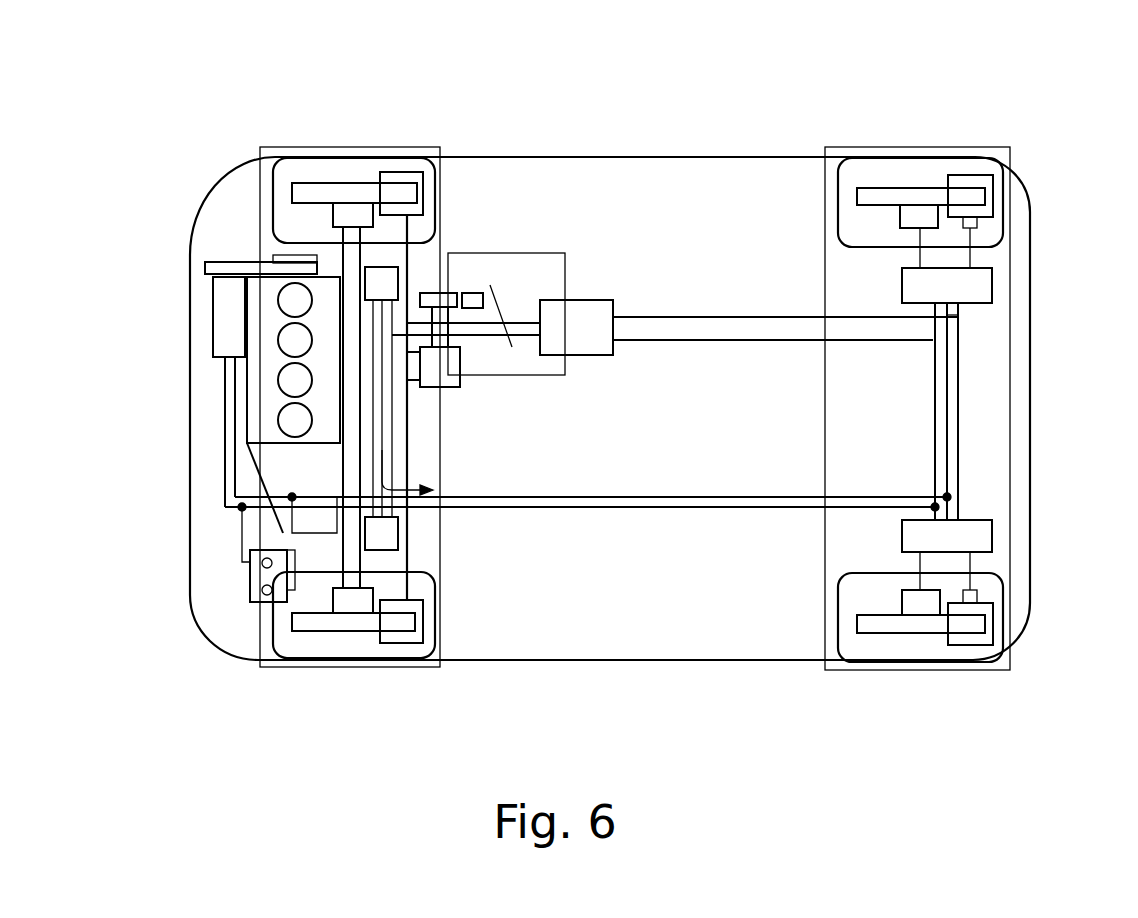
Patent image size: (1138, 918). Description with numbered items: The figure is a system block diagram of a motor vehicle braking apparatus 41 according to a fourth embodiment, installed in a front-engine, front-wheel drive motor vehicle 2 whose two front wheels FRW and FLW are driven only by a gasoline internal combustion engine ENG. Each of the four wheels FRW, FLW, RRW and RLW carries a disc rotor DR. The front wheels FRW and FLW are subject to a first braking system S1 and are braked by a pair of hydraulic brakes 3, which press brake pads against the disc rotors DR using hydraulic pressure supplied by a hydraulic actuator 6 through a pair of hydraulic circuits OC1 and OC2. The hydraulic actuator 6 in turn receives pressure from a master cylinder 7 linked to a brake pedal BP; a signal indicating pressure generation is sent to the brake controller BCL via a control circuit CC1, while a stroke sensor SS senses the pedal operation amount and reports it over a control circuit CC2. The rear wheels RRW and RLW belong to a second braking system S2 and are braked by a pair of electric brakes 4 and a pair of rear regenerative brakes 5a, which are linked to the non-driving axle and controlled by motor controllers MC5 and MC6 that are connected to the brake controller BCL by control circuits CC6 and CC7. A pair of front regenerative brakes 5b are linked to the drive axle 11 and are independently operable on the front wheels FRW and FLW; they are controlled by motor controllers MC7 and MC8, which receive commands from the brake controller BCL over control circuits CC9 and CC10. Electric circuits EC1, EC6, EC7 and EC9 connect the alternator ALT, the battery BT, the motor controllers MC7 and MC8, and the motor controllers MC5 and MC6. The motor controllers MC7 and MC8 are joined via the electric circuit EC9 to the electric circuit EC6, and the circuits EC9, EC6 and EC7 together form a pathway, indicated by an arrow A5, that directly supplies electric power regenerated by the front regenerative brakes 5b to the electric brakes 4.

The motor vehicle 2 is at (640, 660).
The motor vehicle braking apparatus 41 is at (585, 190).
The hydraulic brakes 3 is at (400, 175).
The electric brakes 4 is at (978, 173).
The rear regenerative brakes 5a is at (900, 222).
The front regenerative brakes 5b is at (292, 213).
The hydraulic actuator 6 is at (452, 389).
The master cylinder 7 is at (450, 293).
The drive axle 11 is at (343, 247).
The right front wheel FRW is at (305, 193).
The left front wheel FLW is at (303, 652).
The right rear wheel RRW is at (915, 172).
The left rear wheel RLW is at (930, 657).
The disc rotor DR is at (337, 218).
The alternator ALT is at (222, 312).
The gasoline internal combustion engine ENG is at (262, 393).
The motor controller MC7 is at (375, 285).
The motor controller MC8 is at (283, 533).
The motor controller MC5 is at (985, 287).
The motor controller MC6 is at (980, 538).
The hydraulic circuit OC1 is at (412, 270).
The hydraulic circuit OC2 is at (398, 535).
The control circuit CC1 is at (500, 377).
The control circuit CC2 is at (548, 253).
The control circuit CC6 is at (697, 317).
The control circuit CC7 is at (710, 341).
The control circuit CC9 is at (492, 310).
The control circuit CC10 is at (340, 398).
The electric circuit EC1 is at (225, 462).
The electric circuit EC6 is at (606, 497).
The electric circuit EC7 is at (958, 412).
The electric circuit EC9 is at (225, 507).
The battery BT is at (250, 577).
The first braking system S1 is at (372, 668).
The second braking system S2 is at (848, 670).
The brake pedal BP is at (503, 315).
The stroke sensor SS is at (468, 309).
The brake controller BCL is at (588, 357).
The arrow A5 is at (383, 468).